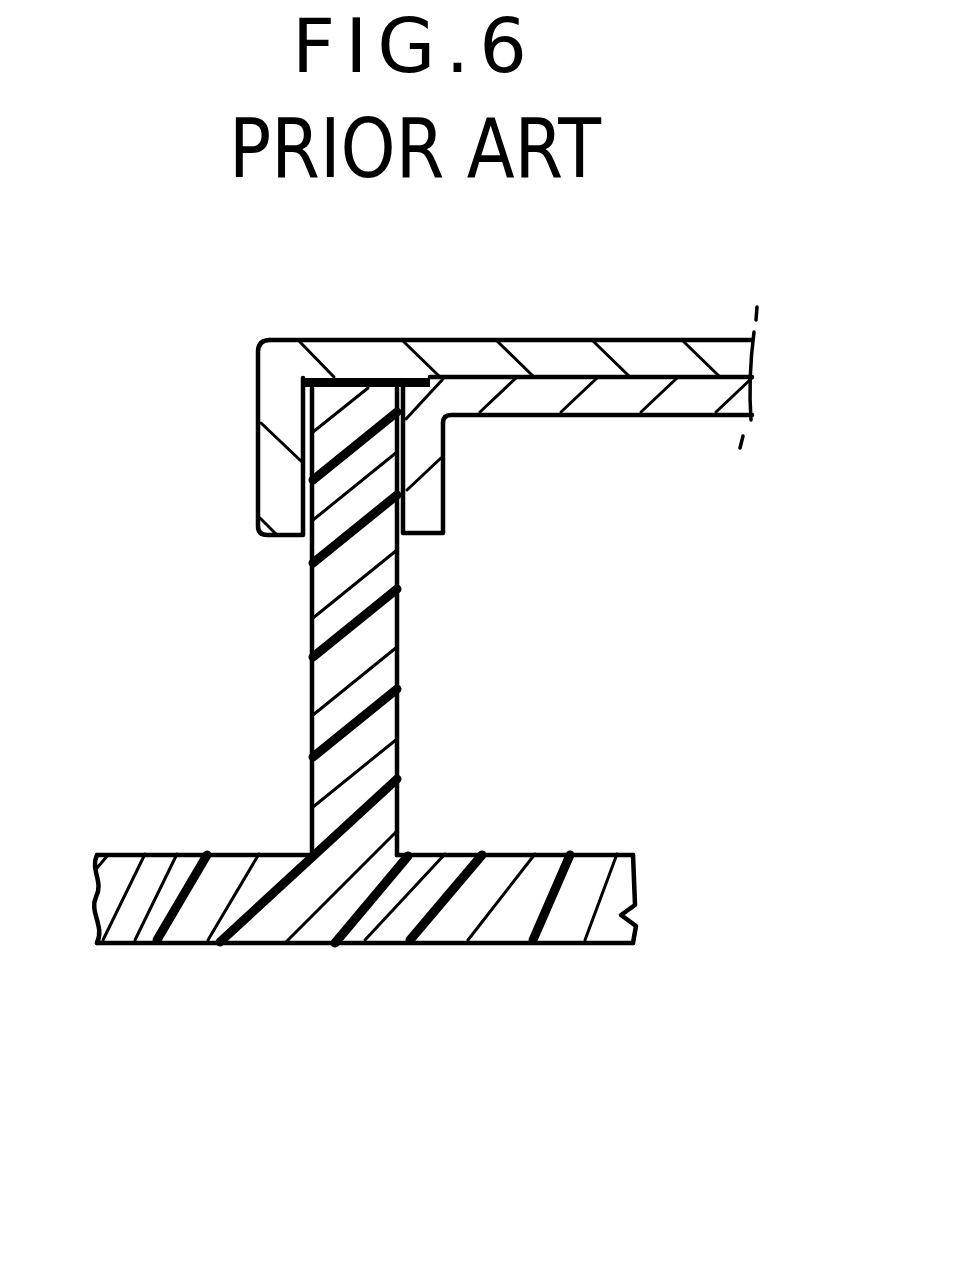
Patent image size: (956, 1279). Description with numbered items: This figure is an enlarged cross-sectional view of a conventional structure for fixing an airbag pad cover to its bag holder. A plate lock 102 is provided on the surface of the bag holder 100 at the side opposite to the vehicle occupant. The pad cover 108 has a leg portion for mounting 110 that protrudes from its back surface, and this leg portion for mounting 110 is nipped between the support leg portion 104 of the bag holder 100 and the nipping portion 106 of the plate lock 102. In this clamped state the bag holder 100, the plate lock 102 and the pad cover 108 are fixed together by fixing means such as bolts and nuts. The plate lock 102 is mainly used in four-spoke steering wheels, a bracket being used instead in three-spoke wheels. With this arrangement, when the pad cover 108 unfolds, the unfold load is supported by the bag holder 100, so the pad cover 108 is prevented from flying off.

The bag holder 100 is at (629, 455).
The plate lock 102 is at (542, 335).
The support leg portion 104 is at (505, 480).
The nipping portion 106 is at (205, 437).
The pad cover 108 is at (365, 980).
The leg portion for mounting 110 is at (396, 660).